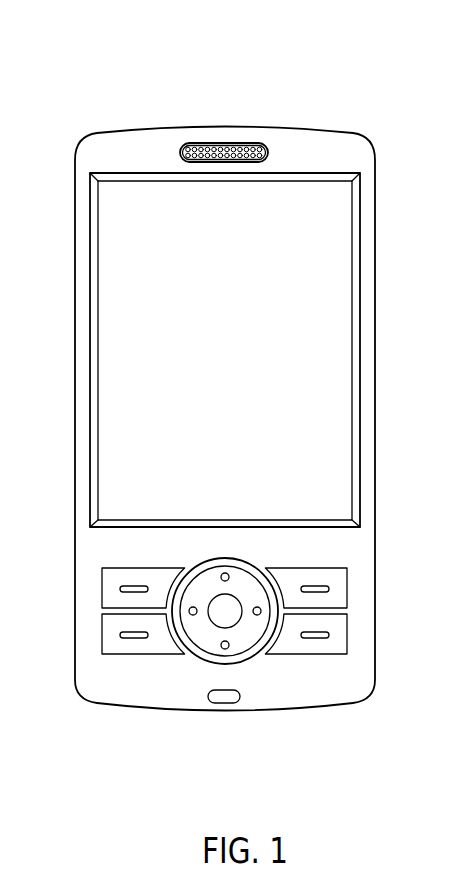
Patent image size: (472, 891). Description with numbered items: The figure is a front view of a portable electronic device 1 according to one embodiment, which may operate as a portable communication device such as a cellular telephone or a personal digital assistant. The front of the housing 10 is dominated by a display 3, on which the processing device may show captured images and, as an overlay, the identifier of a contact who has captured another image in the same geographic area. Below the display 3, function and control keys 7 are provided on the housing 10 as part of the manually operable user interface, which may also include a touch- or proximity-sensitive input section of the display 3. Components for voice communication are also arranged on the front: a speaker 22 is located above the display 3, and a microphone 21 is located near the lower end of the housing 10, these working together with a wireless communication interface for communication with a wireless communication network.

The portable electronic device 1 is at (84, 117).
The display 3 is at (342, 226).
The function and control keys 7 is at (146, 697).
The housing 10 is at (313, 695).
The microphone 21 is at (227, 700).
The speaker 22 is at (226, 143).